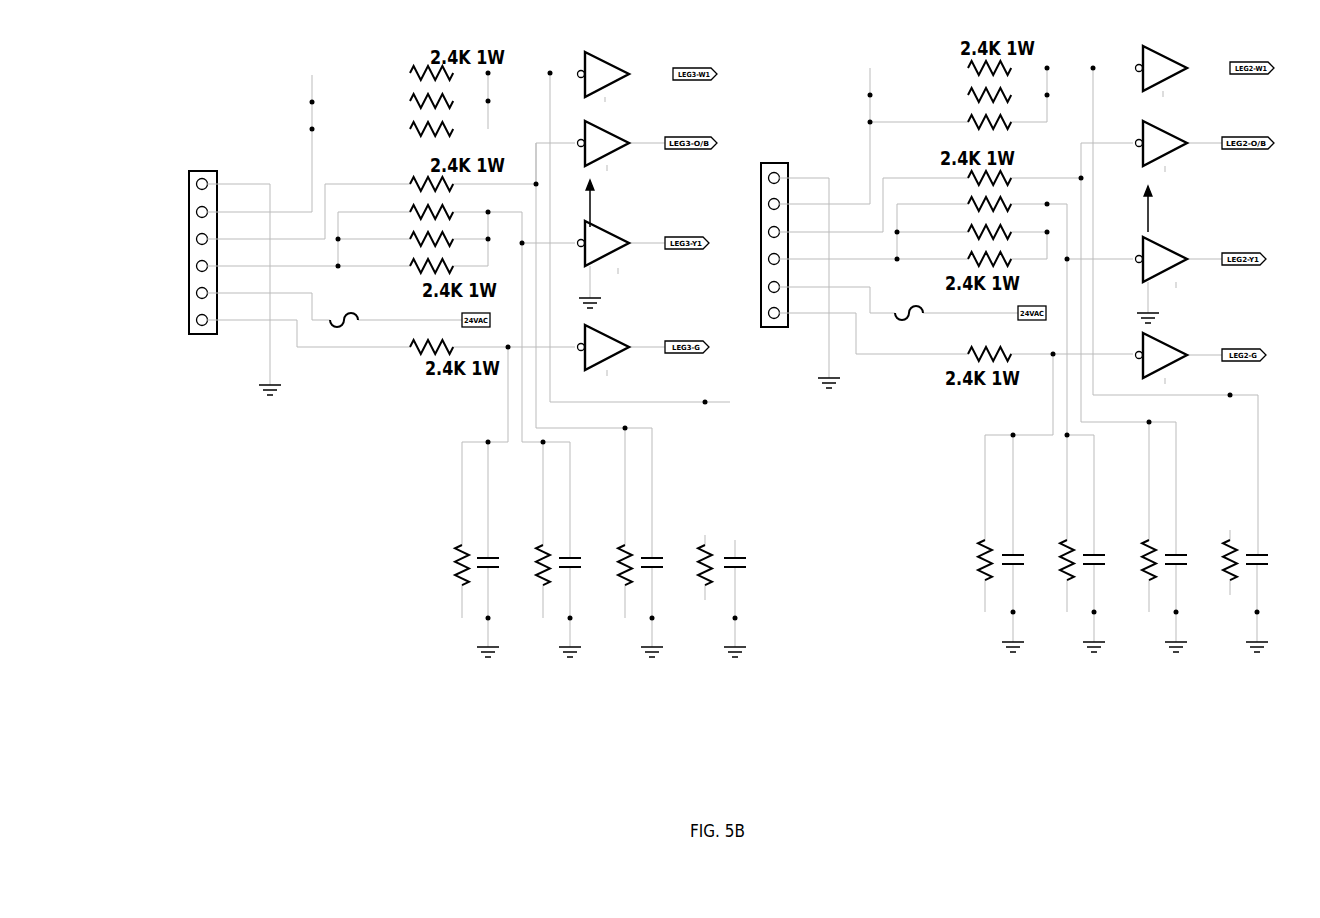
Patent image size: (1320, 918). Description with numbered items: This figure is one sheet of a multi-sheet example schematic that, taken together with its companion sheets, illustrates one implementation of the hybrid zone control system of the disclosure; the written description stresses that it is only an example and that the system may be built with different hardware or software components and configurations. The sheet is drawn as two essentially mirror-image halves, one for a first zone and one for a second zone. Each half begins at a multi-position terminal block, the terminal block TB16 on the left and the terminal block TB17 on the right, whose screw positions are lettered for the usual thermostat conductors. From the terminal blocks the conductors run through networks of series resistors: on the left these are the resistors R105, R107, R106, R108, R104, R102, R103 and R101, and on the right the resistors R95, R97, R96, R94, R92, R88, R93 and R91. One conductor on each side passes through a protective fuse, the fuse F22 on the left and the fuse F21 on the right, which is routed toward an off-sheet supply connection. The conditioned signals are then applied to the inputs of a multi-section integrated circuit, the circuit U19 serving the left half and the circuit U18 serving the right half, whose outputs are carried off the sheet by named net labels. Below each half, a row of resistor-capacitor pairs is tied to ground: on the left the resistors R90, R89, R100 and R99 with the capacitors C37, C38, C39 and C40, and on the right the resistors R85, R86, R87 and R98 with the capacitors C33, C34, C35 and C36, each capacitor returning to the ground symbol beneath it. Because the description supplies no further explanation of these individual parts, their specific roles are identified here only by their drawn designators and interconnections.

The terminal block zone 3 TB16 is at (184, 247).
The terminal block zone 2 TB17 is at (761, 240).
The hex inverter/buffer IC U19 is at (615, 209).
The hex inverter/buffer IC U18 is at (1173, 211).
The fuse 0.14A F22 is at (367, 321).
The fuse 0.14A F21 is at (908, 318).
The resistor 2.4K 1W R105 is at (408, 65).
The resistor 2.4K 1W R107 is at (408, 93).
The resistor 2.4K 1W R106 is at (408, 121).
The resistor 2.4K 1W R108 is at (408, 175).
The resistor 2.4K 1W R104 is at (408, 203).
The resistor 2.4K 1W R102 is at (408, 230).
The resistor 2.4K 1W R103 is at (408, 258).
The resistor 2.4K 1W R101 is at (408, 359).
The resistor 2.4K 1W R95 is at (969, 63).
The resistor 2.4K 1W R97 is at (969, 90).
The resistor 2.4K 1W R96 is at (969, 117).
The resistor 2.4K 1W R94 is at (989, 178).
The resistor 2.4K 1W R92 is at (969, 194).
The resistor 2.4K 1W R88 is at (969, 222).
The resistor 2.4K 1W R93 is at (969, 249).
The resistor 2.4K 1W R91 is at (989, 344).
The resistor 240 ohm R90 is at (454, 565).
The resistor 82 ohm R89 is at (535, 563).
The resistor 240 ohm R100 is at (617, 564).
The resistor 82 ohm R99 is at (697, 563).
The resistor 240 ohm R85 is at (977, 564).
The resistor 82 ohm R86 is at (1059, 562).
The resistor 240 ohm R87 is at (1141, 564).
The resistor 82 ohm R98 is at (1222, 562).
The capacitor .1uF C37 is at (494, 583).
The capacitor .1uF C38 is at (576, 583).
The capacitor .1uF C39 is at (658, 583).
The capacitor .1uF C40 is at (741, 583).
The capacitor .1uF C33 is at (1019, 579).
The capacitor .1uF C34 is at (1100, 579).
The capacitor .1uF C35 is at (1182, 579).
The capacitor .1uF C36 is at (1263, 579).